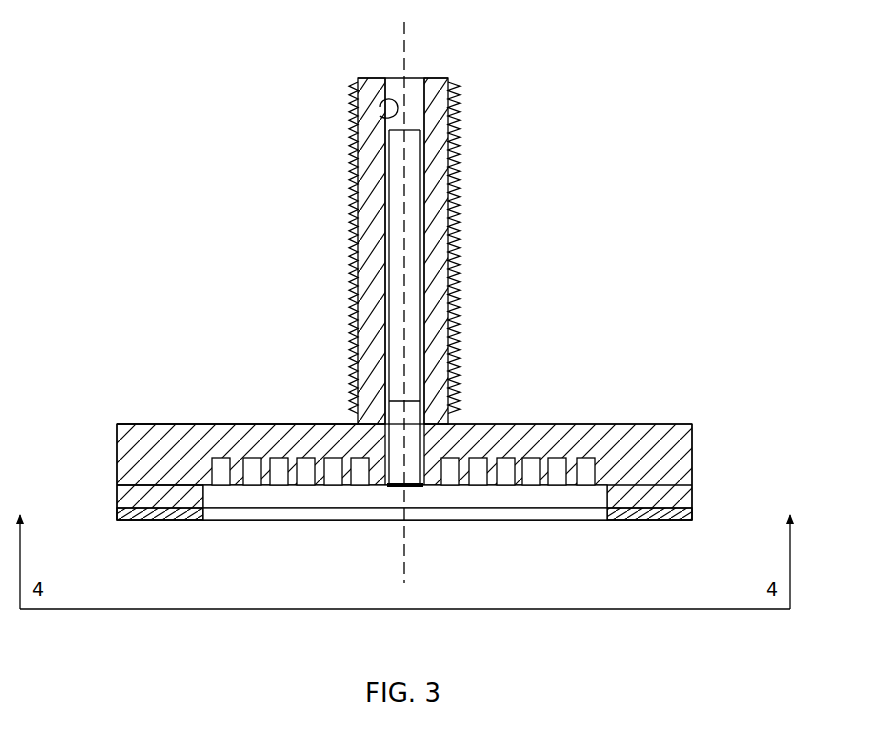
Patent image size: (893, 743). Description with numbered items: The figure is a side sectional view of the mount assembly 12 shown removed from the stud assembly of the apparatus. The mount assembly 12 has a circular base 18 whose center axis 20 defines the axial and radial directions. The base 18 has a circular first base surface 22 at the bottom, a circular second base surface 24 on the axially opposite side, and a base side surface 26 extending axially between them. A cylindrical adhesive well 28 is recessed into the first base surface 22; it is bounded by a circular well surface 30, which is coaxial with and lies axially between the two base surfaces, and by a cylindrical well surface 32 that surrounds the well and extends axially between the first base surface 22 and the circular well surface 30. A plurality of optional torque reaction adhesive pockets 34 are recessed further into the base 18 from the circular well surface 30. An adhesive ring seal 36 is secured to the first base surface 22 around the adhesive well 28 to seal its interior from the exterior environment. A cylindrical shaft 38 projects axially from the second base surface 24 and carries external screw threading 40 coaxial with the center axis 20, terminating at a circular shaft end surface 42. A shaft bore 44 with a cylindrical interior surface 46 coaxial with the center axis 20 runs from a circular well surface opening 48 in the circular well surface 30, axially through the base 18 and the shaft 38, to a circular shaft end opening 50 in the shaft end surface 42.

The mount assembly 12 is at (700, 410).
The circular base 18 is at (117, 458).
The center axis 20 is at (406, 27).
The first base surface 22 is at (128, 527).
The second base surface 24 is at (146, 424).
The base side surface 26 is at (117, 486).
The adhesive well 28 is at (276, 492).
The circular well surface 30 is at (345, 481).
The cylindrical well surface 32 is at (607, 508).
The torque reaction adhesive pockets 34 is at (480, 484).
The adhesive ring seal 36 is at (693, 513).
The cylindrical shaft 38 is at (455, 342).
The external screw threading 40 is at (460, 286).
The shaft end surface 42 is at (370, 79).
The shaft bore 44 is at (415, 100).
The cylindrical interior surface 46 is at (381, 108).
The well surface opening 48 is at (392, 487).
The shaft end opening 50 is at (395, 78).